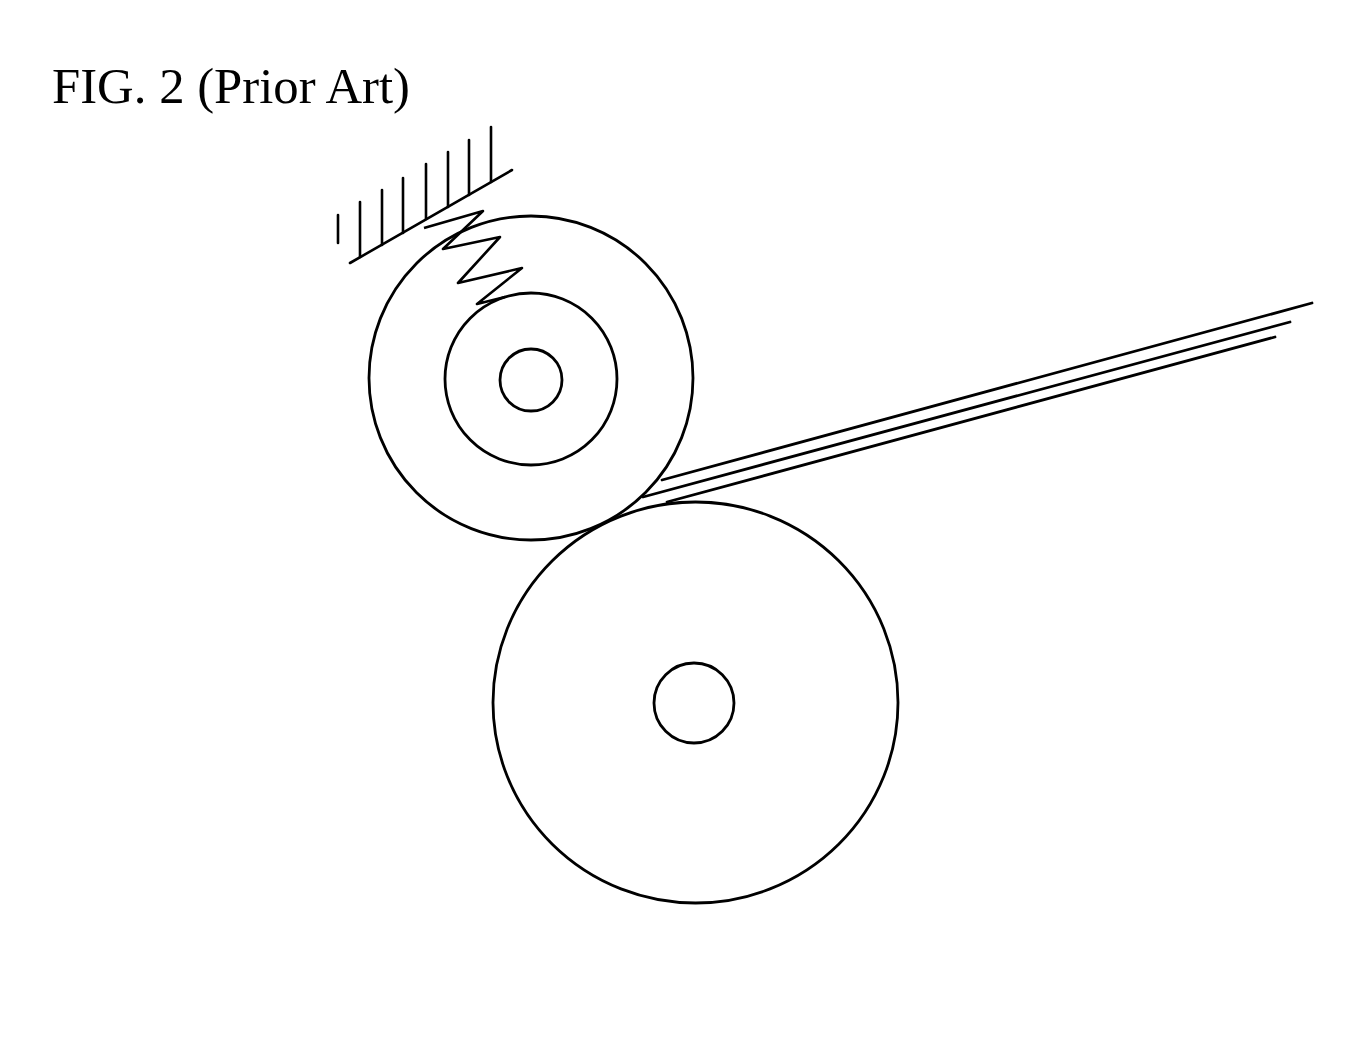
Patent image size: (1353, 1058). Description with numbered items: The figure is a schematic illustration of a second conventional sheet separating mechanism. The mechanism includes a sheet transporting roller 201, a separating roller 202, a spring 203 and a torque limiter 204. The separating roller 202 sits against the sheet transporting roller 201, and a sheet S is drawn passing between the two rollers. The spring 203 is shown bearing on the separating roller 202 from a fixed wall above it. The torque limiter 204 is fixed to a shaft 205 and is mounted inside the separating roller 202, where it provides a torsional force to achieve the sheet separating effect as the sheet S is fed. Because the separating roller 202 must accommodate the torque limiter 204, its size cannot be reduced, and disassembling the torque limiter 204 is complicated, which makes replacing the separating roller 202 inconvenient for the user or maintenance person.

The sheet transporting roller 201 is at (900, 732).
The separating roller 202 is at (690, 340).
The spring 203 is at (520, 268).
The torque limiter 204 is at (452, 418).
The shaft 205 is at (521, 409).
The sheet S is at (982, 418).